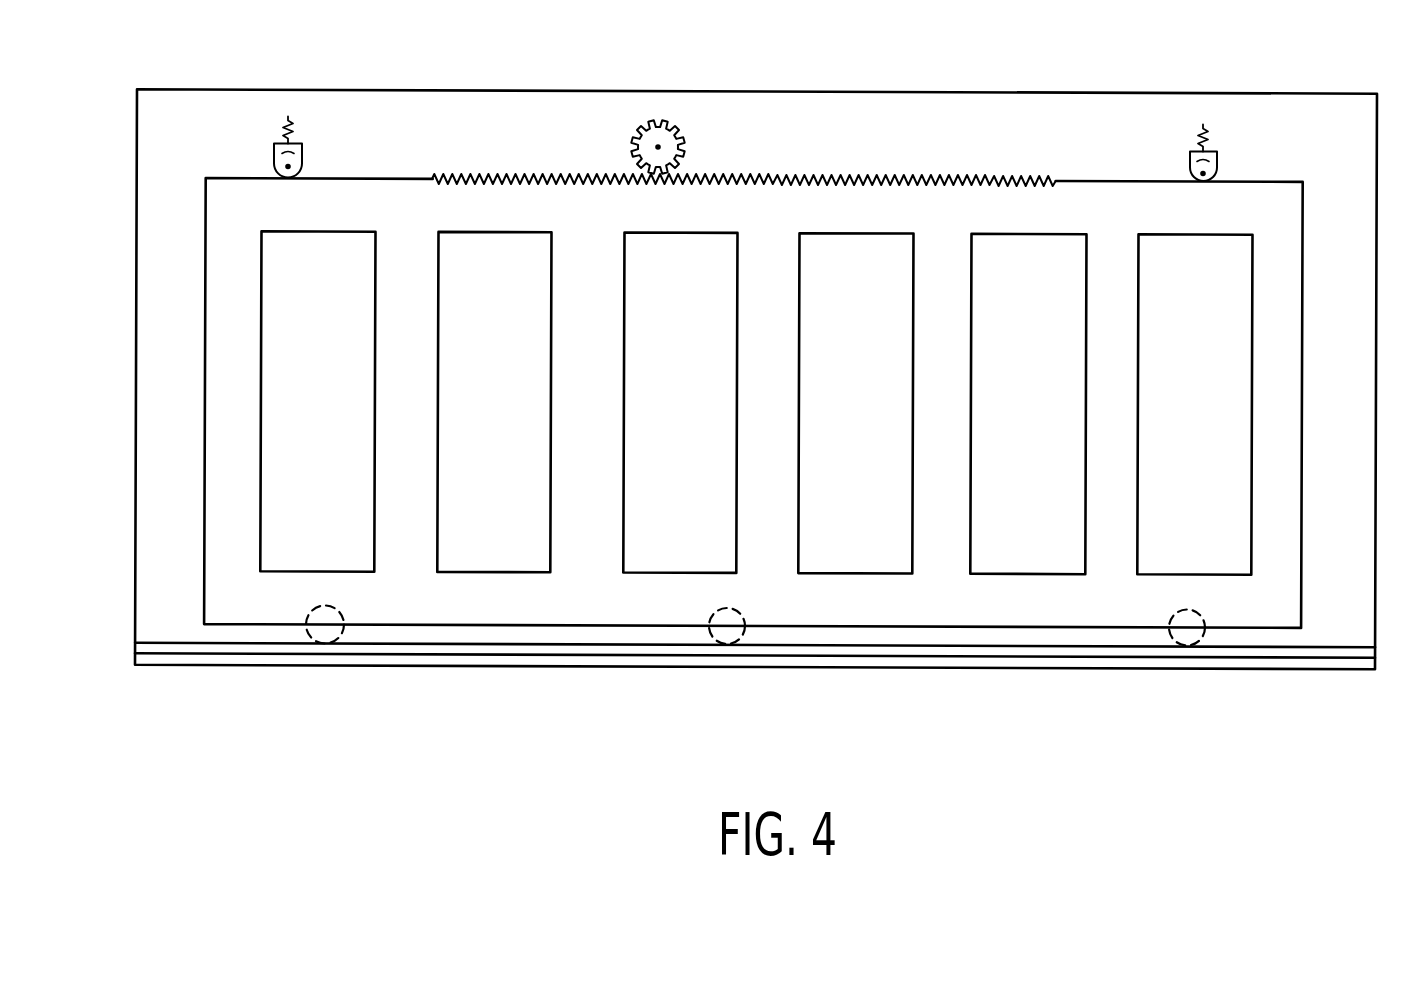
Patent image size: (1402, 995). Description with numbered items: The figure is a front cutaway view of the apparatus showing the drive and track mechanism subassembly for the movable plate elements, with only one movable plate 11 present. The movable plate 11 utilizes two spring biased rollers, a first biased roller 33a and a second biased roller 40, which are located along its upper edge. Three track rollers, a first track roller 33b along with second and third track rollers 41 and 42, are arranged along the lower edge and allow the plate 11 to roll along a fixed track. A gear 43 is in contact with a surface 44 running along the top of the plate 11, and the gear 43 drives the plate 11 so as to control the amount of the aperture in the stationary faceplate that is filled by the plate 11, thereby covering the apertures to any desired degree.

The movable plate 11 is at (899, 603).
The first biased roller 33a is at (270, 156).
The first track roller 33b is at (324, 631).
The second biased roller 40 is at (1182, 166).
The second track roller 41 is at (725, 633).
The third track roller 42 is at (1190, 638).
The gear 43 is at (632, 147).
The surface 44 is at (857, 178).